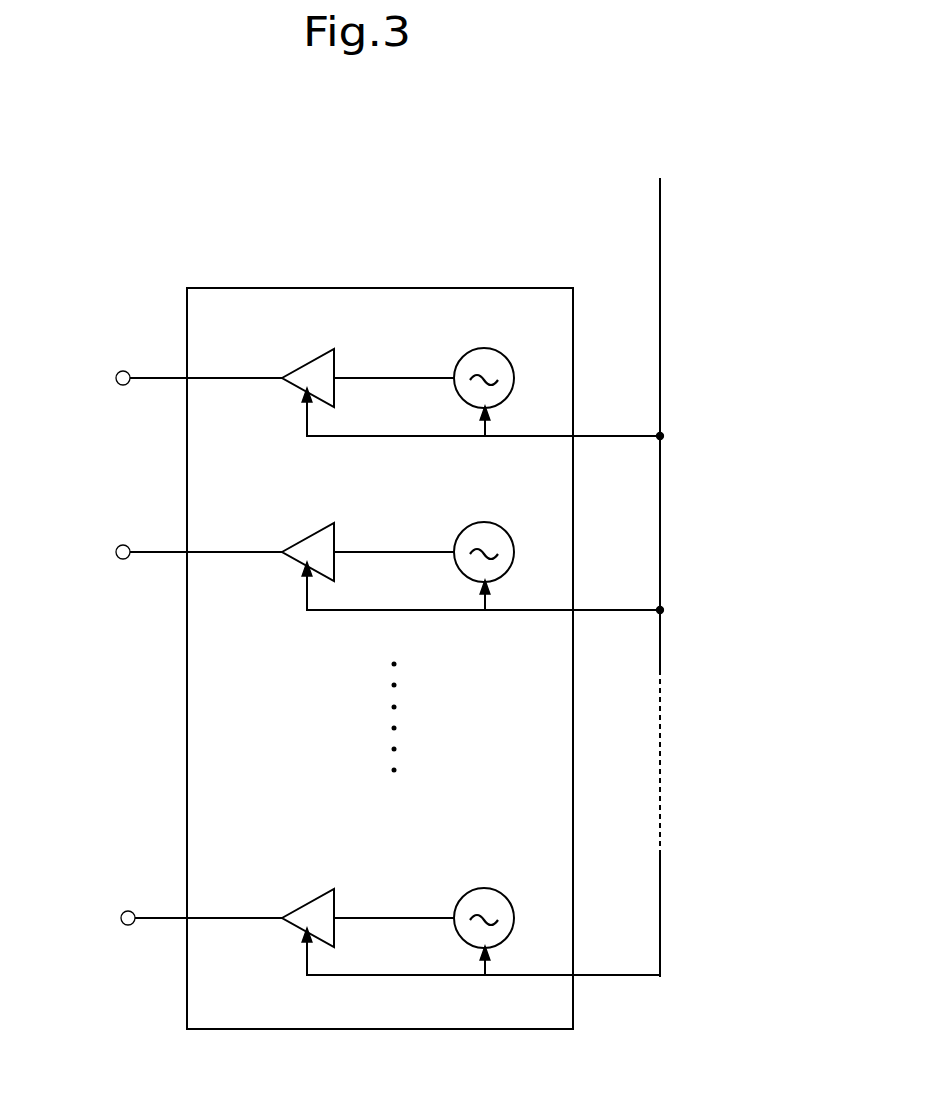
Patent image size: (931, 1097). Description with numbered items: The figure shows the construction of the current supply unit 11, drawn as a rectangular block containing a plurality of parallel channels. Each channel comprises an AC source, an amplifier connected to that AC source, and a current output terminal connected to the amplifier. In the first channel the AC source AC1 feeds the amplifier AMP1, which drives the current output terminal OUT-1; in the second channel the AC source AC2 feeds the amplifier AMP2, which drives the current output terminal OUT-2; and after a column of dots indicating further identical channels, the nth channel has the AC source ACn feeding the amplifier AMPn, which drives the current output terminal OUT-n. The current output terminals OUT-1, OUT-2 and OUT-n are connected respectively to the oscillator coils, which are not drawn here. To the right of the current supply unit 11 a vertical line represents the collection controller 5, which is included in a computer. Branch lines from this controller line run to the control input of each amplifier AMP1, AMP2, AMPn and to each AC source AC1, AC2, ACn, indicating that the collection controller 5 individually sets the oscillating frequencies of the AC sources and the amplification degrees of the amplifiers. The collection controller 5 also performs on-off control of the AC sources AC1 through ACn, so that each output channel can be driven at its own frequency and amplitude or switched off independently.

The collection controller 5 is at (608, 559).
The current supply unit 11 is at (349, 625).
The amplifier AMP1 is at (299, 363).
The AC source AC1 is at (455, 364).
The current output terminal OUT-1 is at (160, 360).
The amplifier AMP2 is at (302, 537).
The AC source AC2 is at (455, 538).
The current output terminal OUT-2 is at (165, 534).
The amplifier AMPn is at (302, 903).
The AC source ACn is at (460, 902).
The current output terminal OUT-n is at (161, 900).